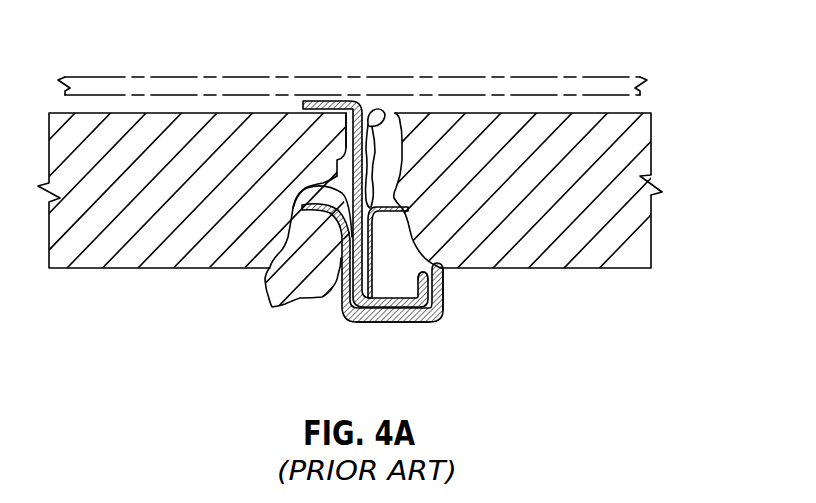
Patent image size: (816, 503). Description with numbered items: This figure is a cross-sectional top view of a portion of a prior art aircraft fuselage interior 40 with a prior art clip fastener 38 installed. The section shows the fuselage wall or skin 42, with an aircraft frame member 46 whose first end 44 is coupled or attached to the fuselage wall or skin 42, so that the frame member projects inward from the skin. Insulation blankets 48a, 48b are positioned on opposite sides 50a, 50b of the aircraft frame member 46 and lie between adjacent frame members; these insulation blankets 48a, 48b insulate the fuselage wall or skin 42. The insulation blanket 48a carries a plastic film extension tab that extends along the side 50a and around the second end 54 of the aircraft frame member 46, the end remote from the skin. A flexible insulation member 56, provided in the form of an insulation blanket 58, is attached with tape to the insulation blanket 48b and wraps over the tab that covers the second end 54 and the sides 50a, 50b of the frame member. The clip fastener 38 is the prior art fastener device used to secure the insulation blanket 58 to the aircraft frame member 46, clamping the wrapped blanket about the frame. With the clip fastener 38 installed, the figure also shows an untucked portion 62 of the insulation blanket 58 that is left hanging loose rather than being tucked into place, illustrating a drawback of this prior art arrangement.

The clip fastener 38 is at (441, 309).
The aircraft fuselage interior 40 is at (670, 118).
The fuselage wall or skin 42 is at (436, 76).
The first end 44 is at (318, 100).
The aircraft frame member 46 is at (343, 305).
The insulation blanket 48a is at (90, 260).
The insulation blanket 48b is at (622, 254).
The side 50a is at (346, 152).
The side 50b is at (398, 114).
The second end 54 is at (415, 318).
The flexible insulation member 56 is at (364, 323).
The insulation blanket 58 is at (437, 286).
The untucked portion 62 is at (270, 278).